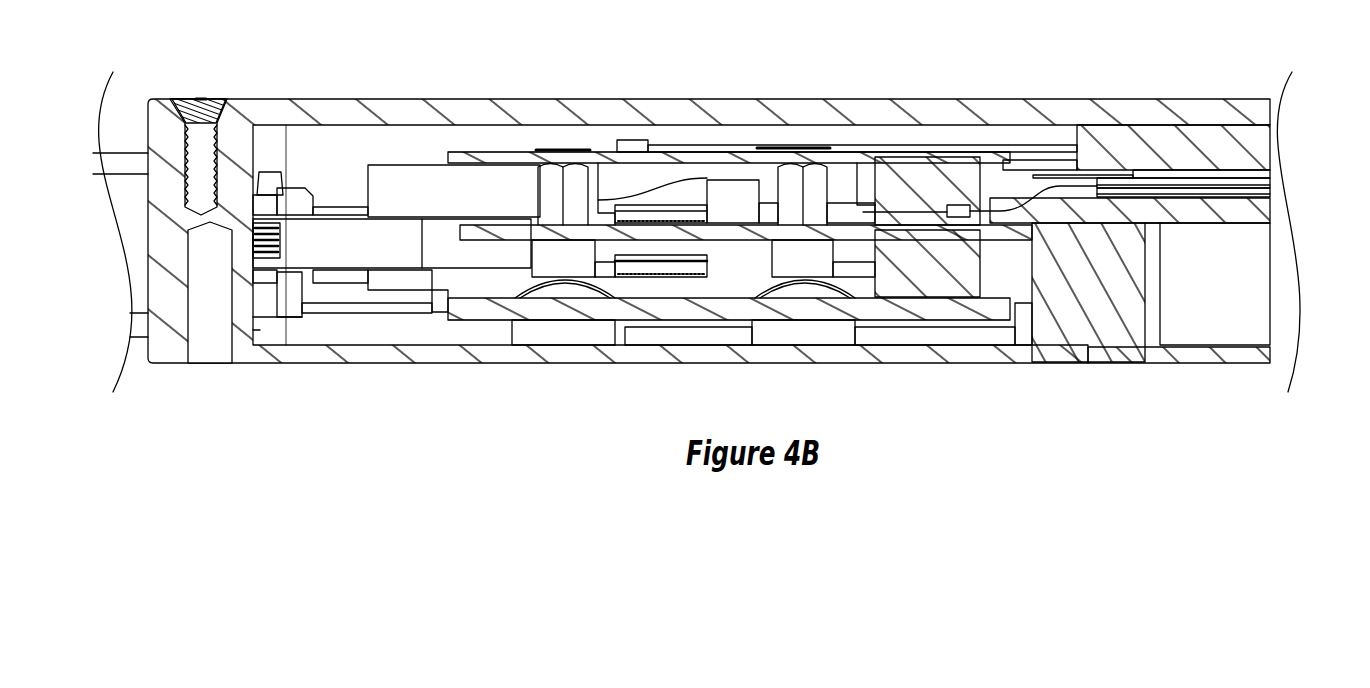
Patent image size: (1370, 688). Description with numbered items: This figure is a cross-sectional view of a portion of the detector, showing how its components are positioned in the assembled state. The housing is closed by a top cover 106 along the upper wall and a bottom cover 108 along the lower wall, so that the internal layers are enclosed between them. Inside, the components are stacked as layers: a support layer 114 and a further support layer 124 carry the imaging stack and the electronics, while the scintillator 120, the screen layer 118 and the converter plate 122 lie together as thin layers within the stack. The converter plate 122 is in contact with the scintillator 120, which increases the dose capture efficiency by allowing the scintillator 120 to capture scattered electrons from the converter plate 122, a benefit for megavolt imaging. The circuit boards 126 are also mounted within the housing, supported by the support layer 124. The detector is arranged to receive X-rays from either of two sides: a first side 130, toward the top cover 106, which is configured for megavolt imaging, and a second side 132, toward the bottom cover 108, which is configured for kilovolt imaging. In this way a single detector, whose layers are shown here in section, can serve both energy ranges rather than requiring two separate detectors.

The top cover 106 is at (1093, 112).
The bottom cover 108 is at (1205, 365).
The support layer 114 is at (1270, 207).
The screen layer 118 is at (1272, 191).
The scintillator 120 is at (1270, 184).
The converter plate 122 is at (1265, 176).
The support layer 124 is at (1203, 155).
The circuit boards 126 is at (758, 148).
The first side 130 is at (919, 84).
The second side 132 is at (920, 378).